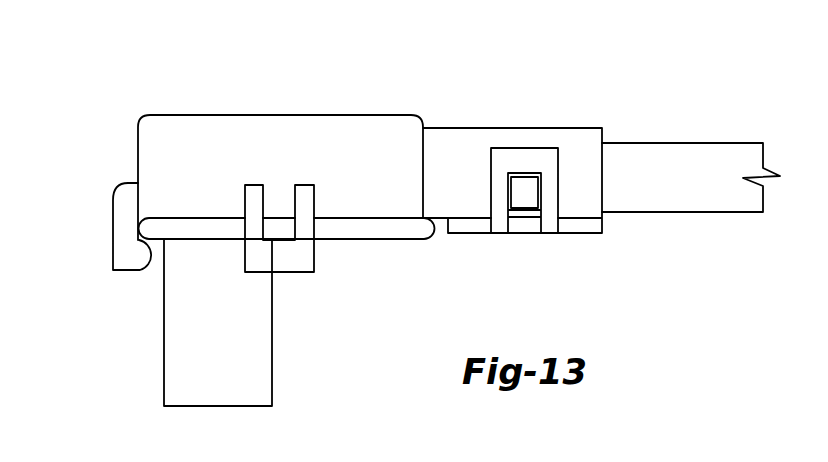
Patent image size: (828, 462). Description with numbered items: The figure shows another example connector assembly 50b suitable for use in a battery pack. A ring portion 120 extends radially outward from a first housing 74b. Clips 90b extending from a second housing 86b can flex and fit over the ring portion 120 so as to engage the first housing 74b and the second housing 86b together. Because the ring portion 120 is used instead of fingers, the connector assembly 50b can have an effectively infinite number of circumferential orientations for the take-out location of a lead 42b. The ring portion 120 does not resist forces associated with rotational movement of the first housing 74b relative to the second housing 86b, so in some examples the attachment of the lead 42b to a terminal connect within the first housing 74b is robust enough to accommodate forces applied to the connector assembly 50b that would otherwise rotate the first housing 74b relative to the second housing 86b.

The second housing 86b is at (258, 115).
The ring portion 120 is at (363, 232).
The clips 90b is at (113, 255).
The first housing 74b is at (272, 368).
The connector assembly 50b is at (536, 68).
The lead 42b is at (677, 143).